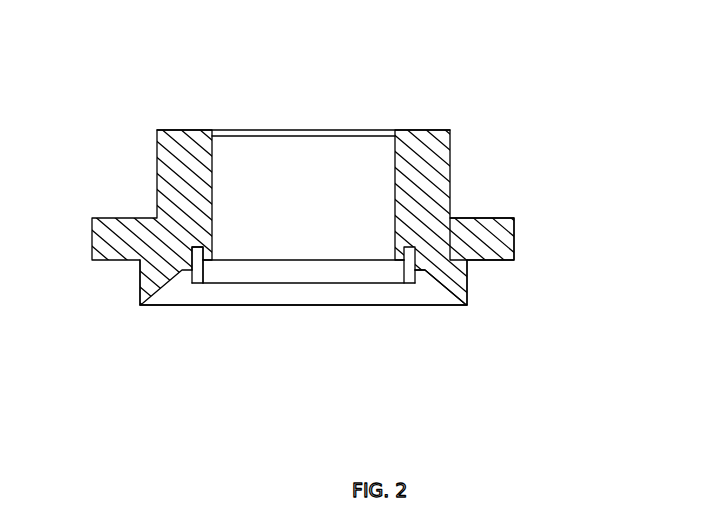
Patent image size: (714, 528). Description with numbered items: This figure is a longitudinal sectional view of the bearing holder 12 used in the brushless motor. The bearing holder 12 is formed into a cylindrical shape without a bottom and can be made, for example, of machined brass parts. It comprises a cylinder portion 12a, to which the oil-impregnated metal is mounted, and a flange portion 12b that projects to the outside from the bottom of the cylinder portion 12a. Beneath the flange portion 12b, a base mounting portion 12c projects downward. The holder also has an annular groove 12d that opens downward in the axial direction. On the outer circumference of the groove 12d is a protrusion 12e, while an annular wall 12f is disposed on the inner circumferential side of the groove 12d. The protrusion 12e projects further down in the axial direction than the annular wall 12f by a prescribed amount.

The bearing holder 12 is at (354, 264).
The cylinder portion 12a is at (452, 153).
The flange portion 12b is at (514, 237).
The base mounting portion 12c is at (467, 278).
The annular groove 12d is at (201, 262).
The protrusion 12e is at (424, 268).
The annular wall 12f is at (227, 261).